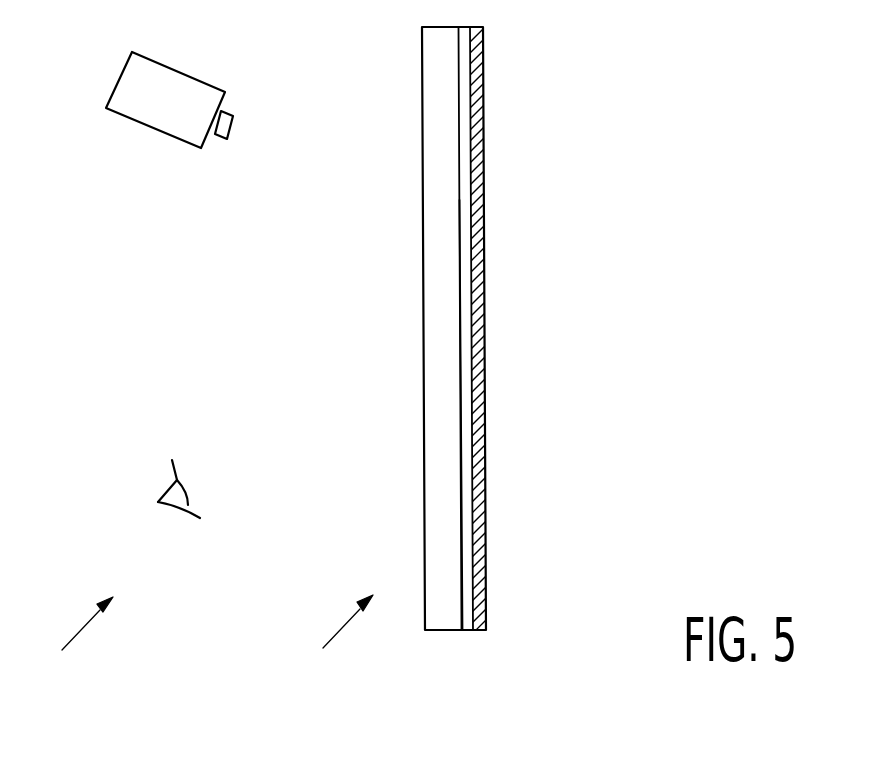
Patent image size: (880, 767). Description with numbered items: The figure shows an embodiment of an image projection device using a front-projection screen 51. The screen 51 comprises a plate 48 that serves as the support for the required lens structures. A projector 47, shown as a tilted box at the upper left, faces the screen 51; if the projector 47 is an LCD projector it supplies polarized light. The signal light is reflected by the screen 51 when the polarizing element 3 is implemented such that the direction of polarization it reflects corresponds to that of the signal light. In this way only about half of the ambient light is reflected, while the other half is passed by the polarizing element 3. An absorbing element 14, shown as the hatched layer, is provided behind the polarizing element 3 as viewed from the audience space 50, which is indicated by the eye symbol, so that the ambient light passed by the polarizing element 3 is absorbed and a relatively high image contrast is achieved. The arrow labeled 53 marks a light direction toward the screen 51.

The projector 47 is at (161, 83).
The plate 48 is at (435, 43).
The absorbing element 14 is at (482, 512).
The polarizing element 3 is at (468, 587).
The audience space 50 is at (152, 434).
The screen 51 is at (323, 677).
The incident light direction 53 is at (23, 678).